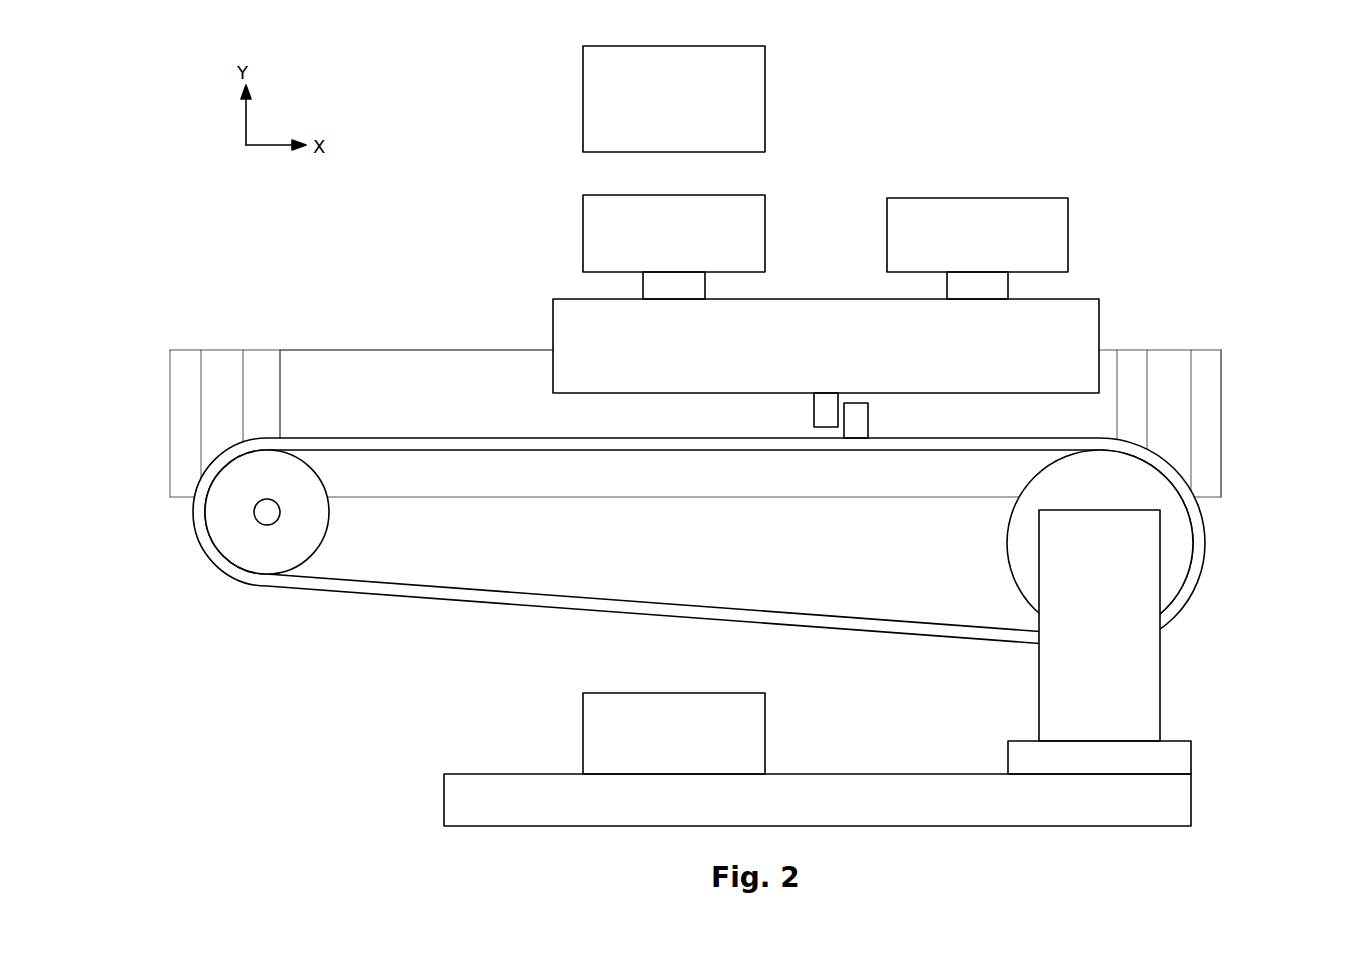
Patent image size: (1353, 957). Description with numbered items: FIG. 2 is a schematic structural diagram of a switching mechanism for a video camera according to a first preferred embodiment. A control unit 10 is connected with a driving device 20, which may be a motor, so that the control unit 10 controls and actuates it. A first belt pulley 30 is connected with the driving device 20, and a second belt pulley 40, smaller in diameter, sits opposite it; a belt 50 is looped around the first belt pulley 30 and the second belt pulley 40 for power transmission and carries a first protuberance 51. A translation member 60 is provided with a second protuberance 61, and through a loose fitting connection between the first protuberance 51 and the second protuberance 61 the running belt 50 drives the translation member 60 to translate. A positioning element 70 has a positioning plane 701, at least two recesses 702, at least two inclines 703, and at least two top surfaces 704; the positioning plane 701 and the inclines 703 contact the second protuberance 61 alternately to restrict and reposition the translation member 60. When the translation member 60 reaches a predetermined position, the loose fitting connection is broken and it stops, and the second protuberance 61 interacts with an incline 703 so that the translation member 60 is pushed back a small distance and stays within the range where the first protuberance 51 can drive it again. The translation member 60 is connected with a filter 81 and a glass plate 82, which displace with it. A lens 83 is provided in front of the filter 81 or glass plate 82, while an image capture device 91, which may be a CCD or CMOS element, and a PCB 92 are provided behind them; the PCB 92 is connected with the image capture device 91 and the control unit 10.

The control unit 10 is at (1191, 757).
The driving device 20 is at (1160, 684).
The first belt pulley 30 is at (1172, 528).
The second belt pulley 40 is at (272, 556).
The belt 50 is at (1198, 592).
The first protuberance 51 is at (868, 417).
The translation member 60 is at (567, 300).
The second protuberance 61 is at (814, 417).
The positioning element 70 is at (466, 350).
The positioning plane 701 is at (340, 372).
The recess 702 is at (263, 375).
The incline 703 is at (220, 370).
The top surface 704 is at (193, 372).
The filter 81 is at (765, 215).
The glass plate 82 is at (1068, 227).
The lens 83 is at (765, 98).
The image capture device 91 is at (765, 725).
The PCB 92 is at (1191, 804).